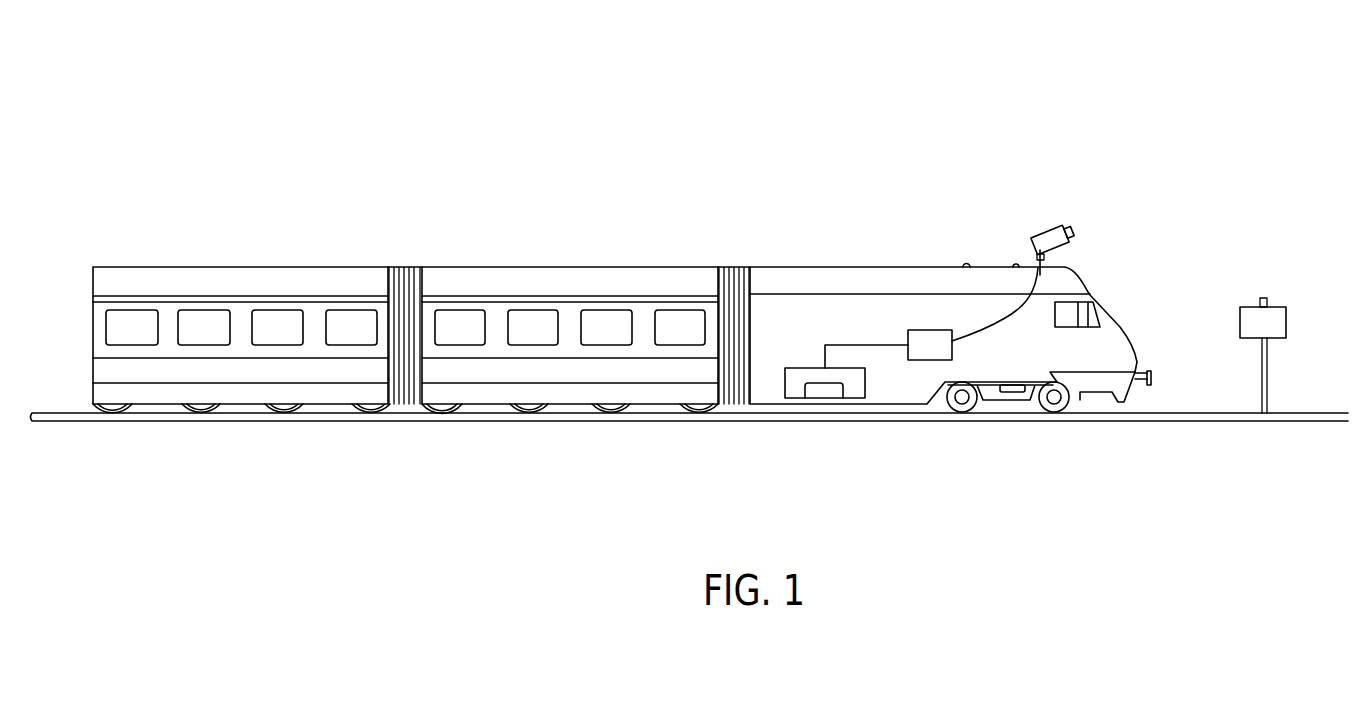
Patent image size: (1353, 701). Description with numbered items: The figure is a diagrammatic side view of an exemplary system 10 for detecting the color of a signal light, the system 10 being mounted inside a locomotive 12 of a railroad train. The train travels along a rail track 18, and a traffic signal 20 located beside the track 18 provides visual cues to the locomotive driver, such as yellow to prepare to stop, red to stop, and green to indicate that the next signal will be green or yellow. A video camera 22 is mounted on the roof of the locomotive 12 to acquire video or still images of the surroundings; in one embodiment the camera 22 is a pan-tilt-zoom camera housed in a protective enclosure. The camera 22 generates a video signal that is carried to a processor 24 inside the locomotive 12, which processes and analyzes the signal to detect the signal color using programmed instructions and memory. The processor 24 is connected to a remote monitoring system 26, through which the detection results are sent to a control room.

The system 10 is at (1195, 76).
The locomotive 12 is at (775, 273).
The rail track 18 is at (1192, 422).
The traffic signal 20 is at (1277, 312).
The video camera 22 is at (1053, 226).
The processor 24 is at (925, 335).
The remote monitoring system 26 is at (808, 368).